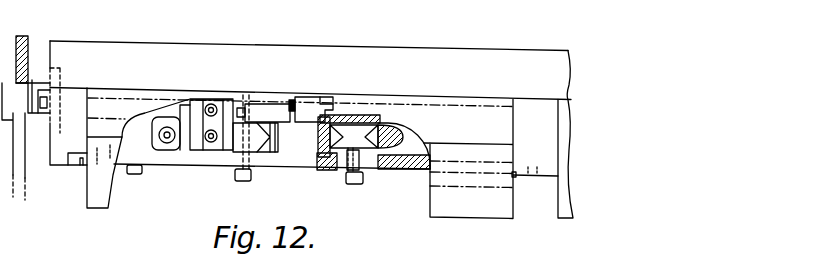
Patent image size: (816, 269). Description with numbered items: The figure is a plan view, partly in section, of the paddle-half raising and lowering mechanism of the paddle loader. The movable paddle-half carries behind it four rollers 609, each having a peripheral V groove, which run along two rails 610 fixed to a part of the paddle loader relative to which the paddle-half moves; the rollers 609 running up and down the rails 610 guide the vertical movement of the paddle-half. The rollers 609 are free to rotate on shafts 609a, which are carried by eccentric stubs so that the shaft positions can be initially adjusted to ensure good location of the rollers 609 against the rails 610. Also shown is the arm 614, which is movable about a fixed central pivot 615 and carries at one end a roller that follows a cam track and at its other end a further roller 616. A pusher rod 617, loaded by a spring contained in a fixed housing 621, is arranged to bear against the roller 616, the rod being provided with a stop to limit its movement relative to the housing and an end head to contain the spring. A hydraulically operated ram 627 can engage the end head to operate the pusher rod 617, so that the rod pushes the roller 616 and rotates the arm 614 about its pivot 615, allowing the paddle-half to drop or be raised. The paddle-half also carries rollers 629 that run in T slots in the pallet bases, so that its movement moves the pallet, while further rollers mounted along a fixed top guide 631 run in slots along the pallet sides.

The rollers 609 is at (343, 150).
The shafts 609a is at (240, 108).
The rails 610 is at (202, 132).
The arm 614 is at (305, 105).
The fixed central pivot 615 is at (272, 133).
The further roller 616 is at (278, 104).
The pusher rod 617 is at (255, 103).
The fixed housing 621 is at (151, 70).
The hydraulically operated ram 627 is at (42, 97).
The rollers 629 is at (142, 169).
The fixed top guide 631 is at (446, 208).